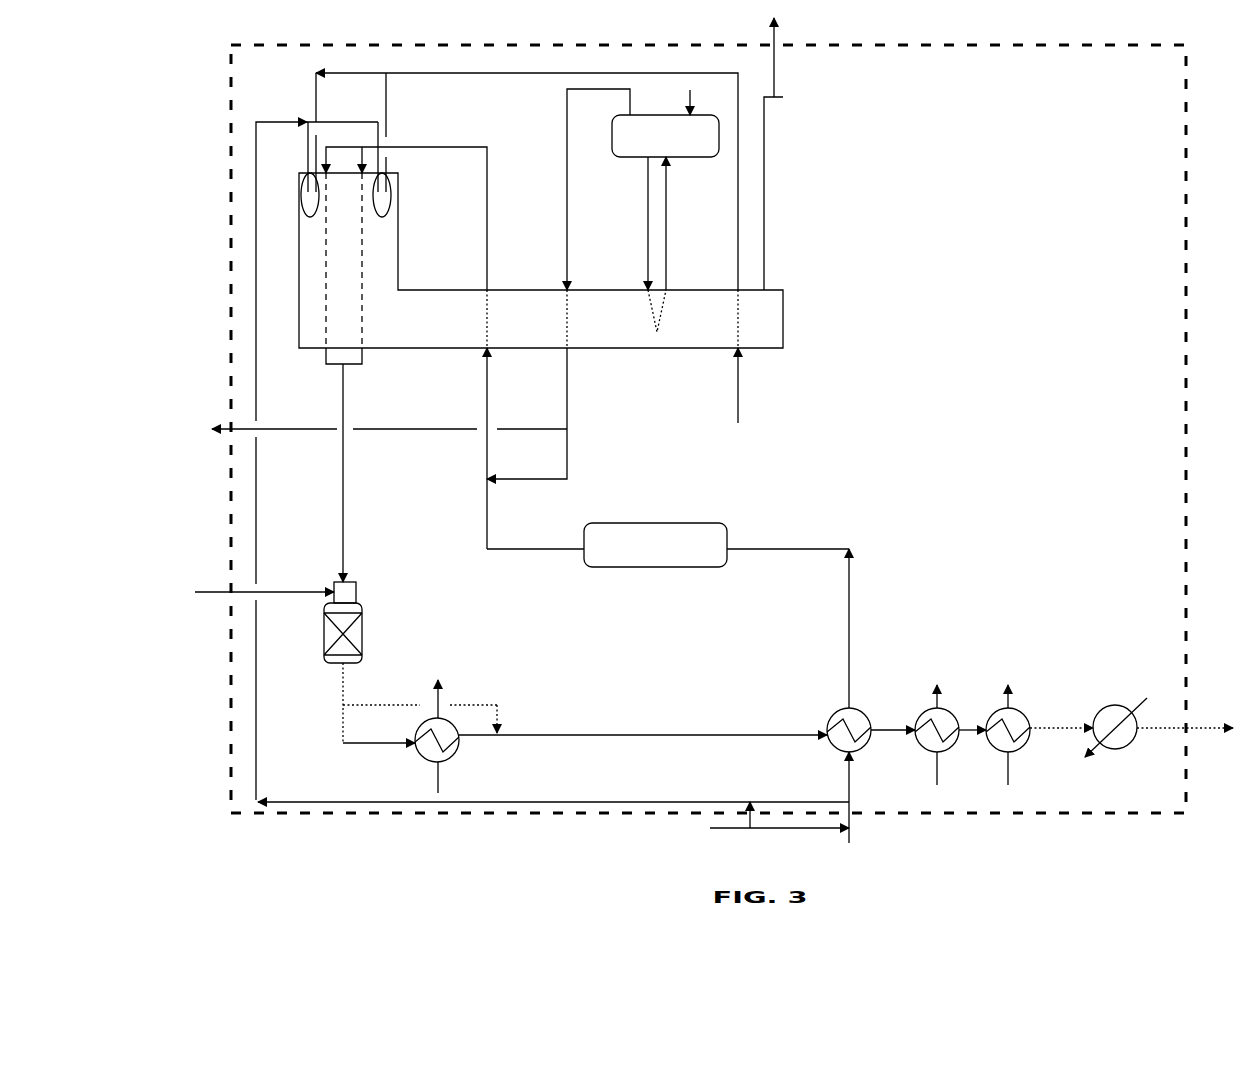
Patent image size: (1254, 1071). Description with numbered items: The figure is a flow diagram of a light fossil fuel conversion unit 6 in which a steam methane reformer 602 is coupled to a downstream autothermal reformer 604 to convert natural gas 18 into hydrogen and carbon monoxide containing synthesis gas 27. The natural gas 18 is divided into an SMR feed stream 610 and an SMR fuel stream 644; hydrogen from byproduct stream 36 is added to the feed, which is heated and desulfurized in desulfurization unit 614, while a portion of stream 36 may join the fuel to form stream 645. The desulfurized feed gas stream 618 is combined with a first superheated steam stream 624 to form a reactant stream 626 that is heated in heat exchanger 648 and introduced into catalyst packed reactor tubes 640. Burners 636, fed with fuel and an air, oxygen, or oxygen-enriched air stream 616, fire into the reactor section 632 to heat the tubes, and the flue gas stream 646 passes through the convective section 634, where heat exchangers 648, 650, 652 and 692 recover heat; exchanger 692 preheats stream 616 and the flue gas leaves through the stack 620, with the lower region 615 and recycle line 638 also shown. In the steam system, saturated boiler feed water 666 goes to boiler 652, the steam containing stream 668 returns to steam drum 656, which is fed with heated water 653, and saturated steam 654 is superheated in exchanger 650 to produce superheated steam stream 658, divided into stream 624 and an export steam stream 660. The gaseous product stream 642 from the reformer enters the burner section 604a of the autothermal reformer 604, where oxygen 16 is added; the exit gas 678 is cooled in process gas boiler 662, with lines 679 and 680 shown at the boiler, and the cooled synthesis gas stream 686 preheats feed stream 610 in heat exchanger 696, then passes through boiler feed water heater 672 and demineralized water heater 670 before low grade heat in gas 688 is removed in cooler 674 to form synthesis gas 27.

The light fossil fuel conversion unit 6 is at (1187, 88).
The oxygen stream 16 is at (264, 579).
The natural gas 18 is at (859, 832).
The synthesis gas 27 is at (1195, 728).
The byproduct stream 36 is at (775, 838).
The steam methane reformer 602 is at (518, 230).
The autothermal reformer 604 is at (359, 633).
The burner section 604a is at (368, 594).
The SMR feed stream 610 is at (834, 797).
The desulfurization unit 614 is at (716, 615).
The lower chamber 615 is at (598, 368).
The oxidant stream 616 is at (723, 385).
The desulfurized feed gas stream 618 is at (535, 537).
The flue gas outlet 620 is at (797, 54).
The first superheated steam stream 624 is at (527, 413).
The reactant stream 626 is at (472, 448).
The reactor section 632 is at (377, 260).
The convective section 634 is at (406, 218).
The burners 636 is at (329, 145).
The recycle line 638 is at (280, 461).
The reactor tubes 640 is at (359, 260).
The gaseous product stream 642 is at (359, 473).
The SMR fuel stream 644 is at (771, 804).
The fuel stream 645 is at (553, 788).
The flue gas stream 646 is at (405, 320).
The heat exchanger 648 is at (495, 319).
The heat exchanger 650 is at (583, 319).
The heat exchanger 652 is at (669, 311).
The water 653 is at (706, 102).
The steam stream 654 is at (598, 189).
The steam drum 656 is at (665, 136).
The superheated steam stream 658 is at (552, 404).
The export steam stream 660 is at (379, 422).
The process gas boiler 662 is at (448, 736).
The saturated boiler feed water stream 666 is at (633, 223).
The steam containing stream 668 is at (685, 223).
The demineralized water heater 670 is at (1002, 735).
The boiler feed water heater 672 is at (921, 735).
The cooler 674 is at (1116, 722).
The ATR exit gas 678 is at (328, 703).
The line 679 is at (420, 710).
The line 680 is at (379, 734).
The cooled synthesis gas stream 686 is at (643, 723).
The gas 688 is at (1061, 717).
The heat exchanger 692 is at (541, 210).
The heat exchanger 696 is at (859, 725).